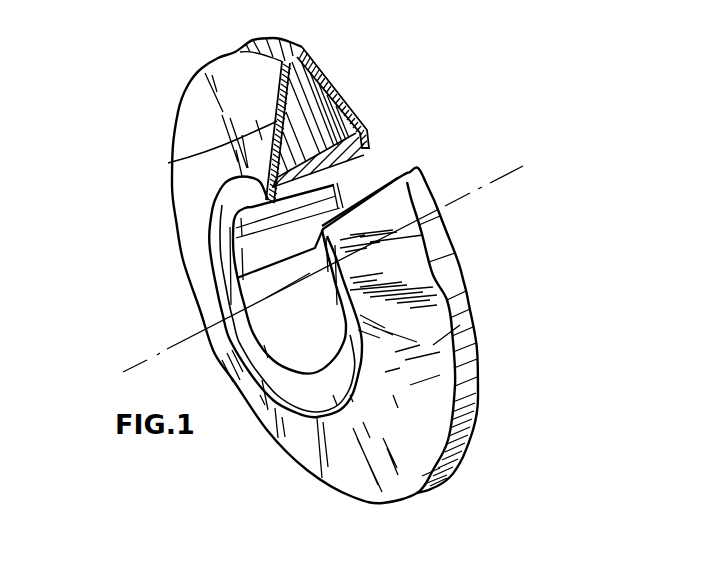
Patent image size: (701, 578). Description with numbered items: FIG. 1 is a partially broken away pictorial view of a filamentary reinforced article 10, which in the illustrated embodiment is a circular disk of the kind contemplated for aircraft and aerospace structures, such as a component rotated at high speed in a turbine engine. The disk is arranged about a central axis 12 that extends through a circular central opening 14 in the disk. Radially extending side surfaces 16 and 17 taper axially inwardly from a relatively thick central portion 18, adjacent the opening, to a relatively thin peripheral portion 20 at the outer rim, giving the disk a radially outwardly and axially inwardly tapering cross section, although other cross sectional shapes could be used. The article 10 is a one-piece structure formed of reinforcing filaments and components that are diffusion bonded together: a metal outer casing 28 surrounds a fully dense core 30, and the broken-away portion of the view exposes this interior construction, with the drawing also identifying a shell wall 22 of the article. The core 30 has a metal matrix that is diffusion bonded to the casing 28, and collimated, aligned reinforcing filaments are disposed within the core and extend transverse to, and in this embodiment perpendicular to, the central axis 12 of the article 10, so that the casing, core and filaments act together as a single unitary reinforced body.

The filamentary reinforced article 10 is at (498, 29).
The central axis 12 is at (130, 371).
The circular central opening 14 is at (338, 351).
The side surface 16 is at (422, 477).
The side surface 17 is at (353, 114).
The central portion 18 is at (292, 391).
The peripheral portion 20 is at (228, 60).
The shell wall 22 is at (348, 91).
The metal outer casing 28 is at (333, 62).
The fully dense core 30 is at (168, 163).